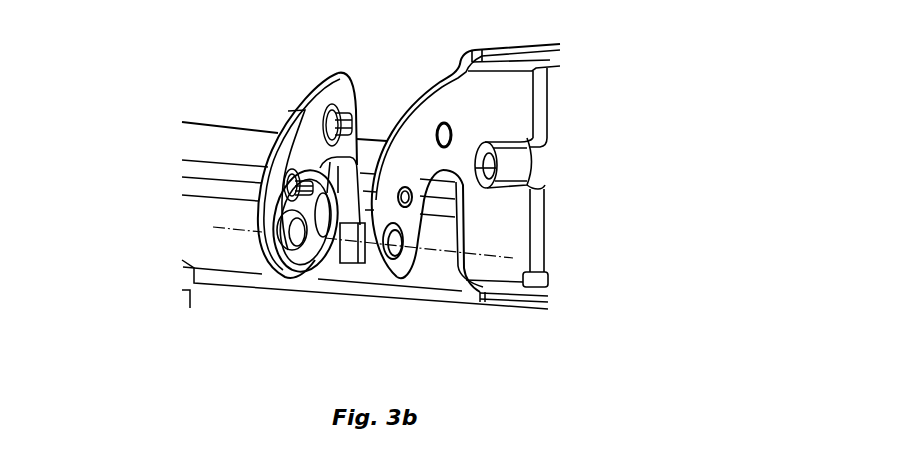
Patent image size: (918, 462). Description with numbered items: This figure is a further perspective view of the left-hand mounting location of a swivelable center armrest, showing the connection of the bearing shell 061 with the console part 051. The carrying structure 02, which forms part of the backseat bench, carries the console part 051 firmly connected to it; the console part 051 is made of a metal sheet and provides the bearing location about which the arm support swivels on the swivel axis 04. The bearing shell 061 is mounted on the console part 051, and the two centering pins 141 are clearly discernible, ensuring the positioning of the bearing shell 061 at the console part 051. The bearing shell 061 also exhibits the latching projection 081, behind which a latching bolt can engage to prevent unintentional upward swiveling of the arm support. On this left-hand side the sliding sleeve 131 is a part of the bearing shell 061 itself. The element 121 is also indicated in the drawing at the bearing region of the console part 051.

The carrying structure 02 is at (178, 192).
The swivel axis 04 is at (237, 227).
The left console part 051 is at (457, 105).
The left bearing shell 061 is at (300, 157).
The latching projection 081 is at (350, 263).
The pivot hole 121 is at (403, 247).
The sliding sleeve 131 is at (332, 262).
The centering pins 141 is at (323, 116).